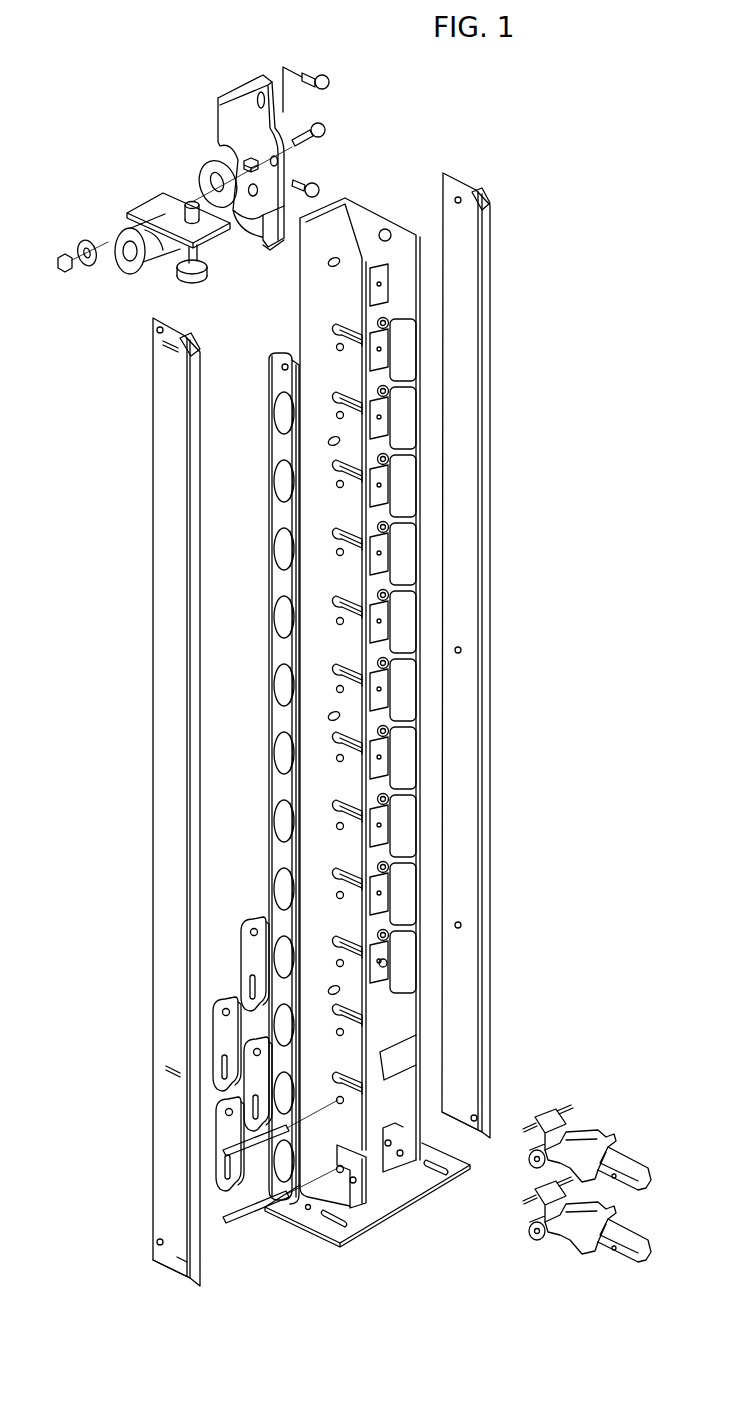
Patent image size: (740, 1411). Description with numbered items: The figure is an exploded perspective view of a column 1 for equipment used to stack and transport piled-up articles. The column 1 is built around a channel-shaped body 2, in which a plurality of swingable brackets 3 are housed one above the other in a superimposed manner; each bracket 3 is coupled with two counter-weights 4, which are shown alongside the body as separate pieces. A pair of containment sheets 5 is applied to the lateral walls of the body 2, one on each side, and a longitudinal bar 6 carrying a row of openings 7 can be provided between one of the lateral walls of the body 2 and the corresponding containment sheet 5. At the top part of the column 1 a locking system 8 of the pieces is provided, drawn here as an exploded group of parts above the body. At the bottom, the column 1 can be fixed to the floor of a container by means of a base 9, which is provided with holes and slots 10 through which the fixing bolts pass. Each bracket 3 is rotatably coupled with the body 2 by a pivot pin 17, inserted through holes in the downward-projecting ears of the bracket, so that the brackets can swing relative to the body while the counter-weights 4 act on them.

The column 1 is at (557, 275).
The channel-shaped body 2 is at (313, 313).
The swingable bracket 3 is at (390, 413).
The counter-weight 4 is at (226, 1003).
The containment sheet 5 is at (168, 660).
The longitudinal bar 6 is at (262, 583).
The opening 7 is at (273, 537).
The locking system 8 is at (138, 138).
The base 9 is at (385, 1200).
The holes and slots 10 is at (357, 1222).
The pivot pin 17 is at (230, 1225).